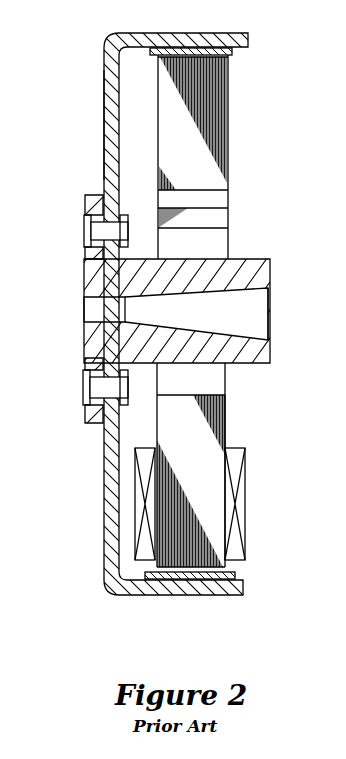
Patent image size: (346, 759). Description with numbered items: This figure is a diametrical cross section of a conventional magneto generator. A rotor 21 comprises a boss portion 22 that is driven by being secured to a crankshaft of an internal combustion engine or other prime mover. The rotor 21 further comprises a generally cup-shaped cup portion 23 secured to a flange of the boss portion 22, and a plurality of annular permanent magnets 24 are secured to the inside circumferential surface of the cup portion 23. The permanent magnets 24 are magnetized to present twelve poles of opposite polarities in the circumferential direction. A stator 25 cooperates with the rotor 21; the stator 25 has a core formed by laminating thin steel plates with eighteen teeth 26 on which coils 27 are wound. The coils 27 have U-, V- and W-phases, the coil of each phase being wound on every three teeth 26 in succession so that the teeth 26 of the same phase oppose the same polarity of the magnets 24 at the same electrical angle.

The rotor 21 is at (104, 160).
The boss portion 22 is at (258, 258).
The cup portion 23 is at (103, 80).
The permanent magnets 24 is at (233, 53).
The stator 25 is at (227, 410).
The teeth 26 is at (227, 438).
The coils 27 is at (246, 510).